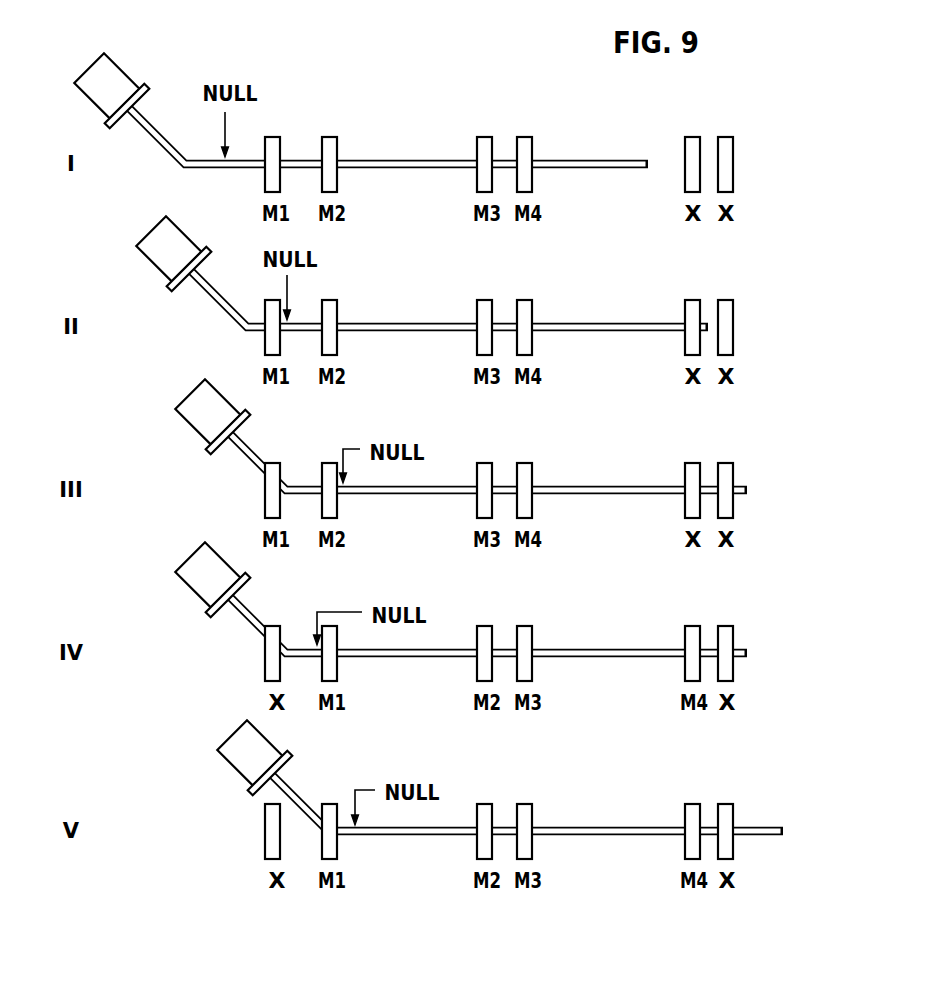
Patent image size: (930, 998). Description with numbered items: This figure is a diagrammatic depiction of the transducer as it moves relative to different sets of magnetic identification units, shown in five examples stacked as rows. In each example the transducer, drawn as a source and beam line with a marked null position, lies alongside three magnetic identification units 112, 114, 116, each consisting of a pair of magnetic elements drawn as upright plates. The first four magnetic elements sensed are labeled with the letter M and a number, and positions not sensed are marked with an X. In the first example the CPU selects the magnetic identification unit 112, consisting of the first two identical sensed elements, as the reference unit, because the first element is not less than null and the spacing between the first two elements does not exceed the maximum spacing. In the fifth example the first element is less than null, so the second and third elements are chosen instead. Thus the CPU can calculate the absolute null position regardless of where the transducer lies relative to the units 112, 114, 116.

The magnetic identification unit 112 is at (305, 123).
The magnetic identification unit 114 is at (503, 123).
The magnetic identification unit 116 is at (705, 123).